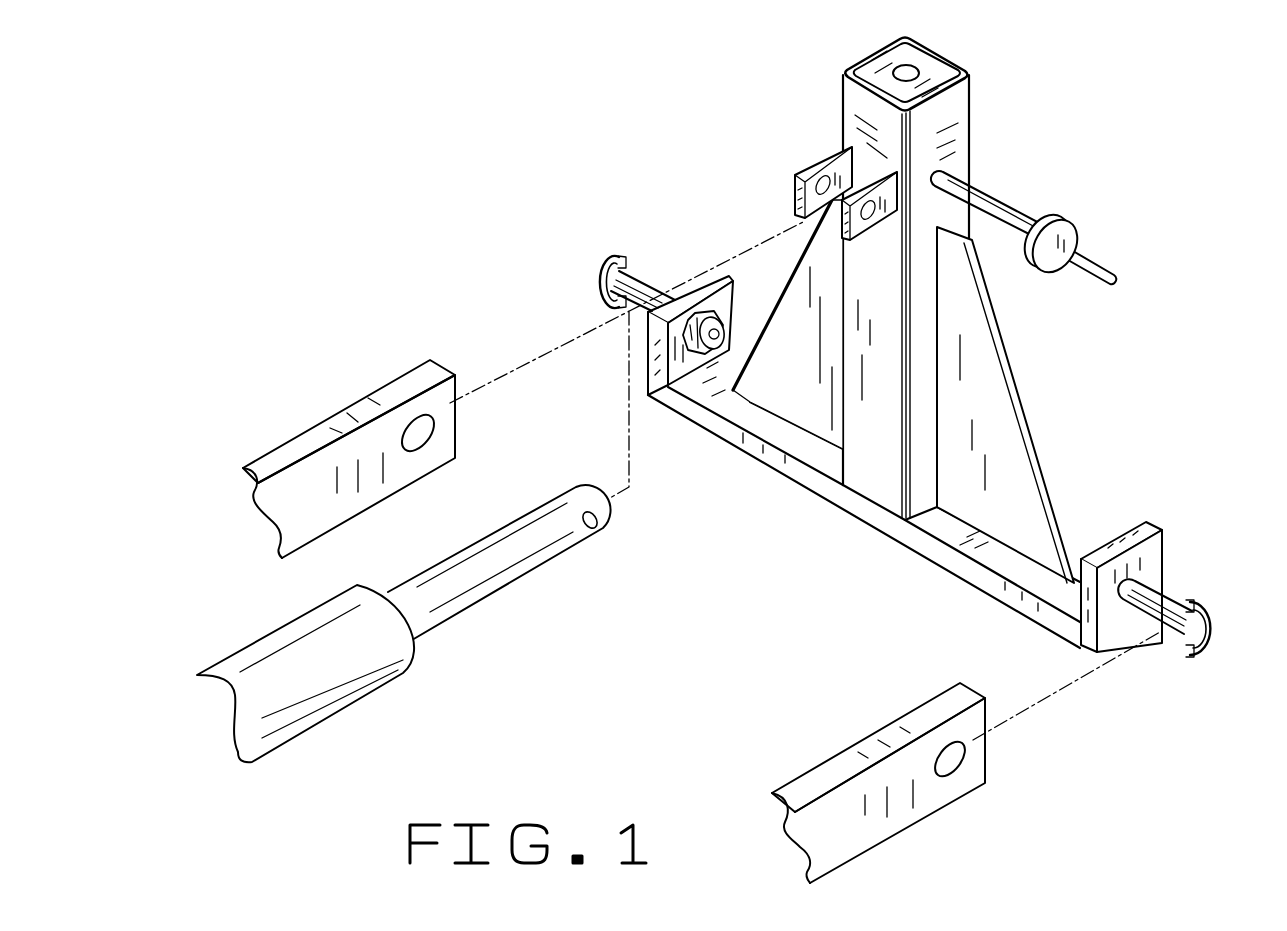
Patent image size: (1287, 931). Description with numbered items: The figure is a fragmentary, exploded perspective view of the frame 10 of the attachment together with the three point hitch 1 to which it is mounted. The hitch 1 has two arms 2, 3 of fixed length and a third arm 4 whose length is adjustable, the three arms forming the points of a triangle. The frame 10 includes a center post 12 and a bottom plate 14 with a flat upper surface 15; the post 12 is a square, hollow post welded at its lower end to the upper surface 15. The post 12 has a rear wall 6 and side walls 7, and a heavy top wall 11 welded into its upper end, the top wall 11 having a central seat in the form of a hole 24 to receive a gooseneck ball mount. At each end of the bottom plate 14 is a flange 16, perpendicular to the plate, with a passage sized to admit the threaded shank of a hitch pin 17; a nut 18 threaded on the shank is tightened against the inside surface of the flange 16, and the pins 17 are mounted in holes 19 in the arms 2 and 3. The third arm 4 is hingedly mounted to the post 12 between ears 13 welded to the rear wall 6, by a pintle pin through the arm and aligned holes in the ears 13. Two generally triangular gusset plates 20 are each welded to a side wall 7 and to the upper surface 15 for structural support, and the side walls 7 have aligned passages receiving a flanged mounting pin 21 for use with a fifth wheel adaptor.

The three point hitch 1 is at (460, 447).
The arm 2 is at (362, 397).
The arm 3 is at (918, 795).
The third arm 4 is at (527, 573).
The rear wall 6 is at (862, 338).
The side wall 7 is at (940, 172).
The frame 10 is at (863, 530).
The top wall 11 is at (940, 74).
The center post 12 is at (975, 125).
The ears 13 is at (826, 160).
The bottom plate 14 is at (803, 447).
The upper surface 15 is at (990, 553).
The flanges 16 is at (710, 288).
The hitch pin 17 is at (644, 270).
The nut 18 is at (705, 332).
The holes 19 is at (421, 447).
The gusset plates 20 is at (786, 278).
The mounting pin 21 is at (1032, 215).
The hole 24 is at (905, 68).